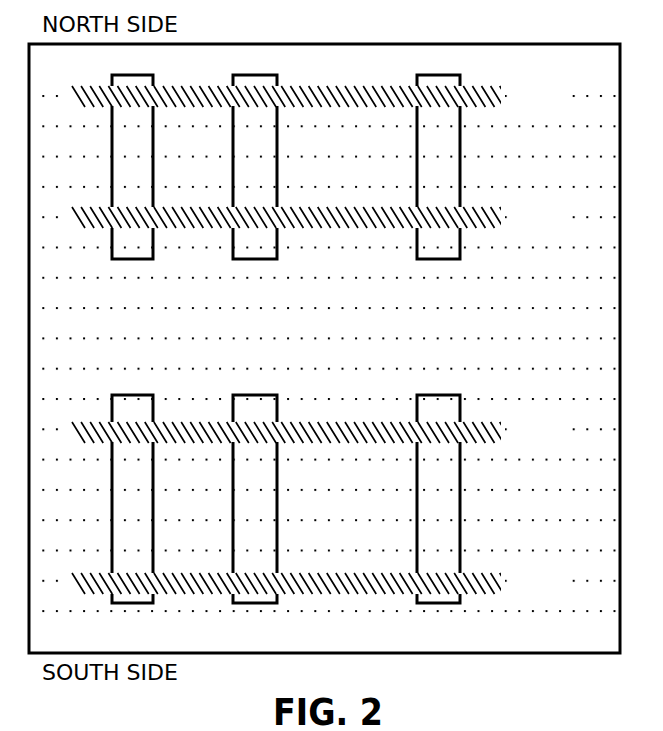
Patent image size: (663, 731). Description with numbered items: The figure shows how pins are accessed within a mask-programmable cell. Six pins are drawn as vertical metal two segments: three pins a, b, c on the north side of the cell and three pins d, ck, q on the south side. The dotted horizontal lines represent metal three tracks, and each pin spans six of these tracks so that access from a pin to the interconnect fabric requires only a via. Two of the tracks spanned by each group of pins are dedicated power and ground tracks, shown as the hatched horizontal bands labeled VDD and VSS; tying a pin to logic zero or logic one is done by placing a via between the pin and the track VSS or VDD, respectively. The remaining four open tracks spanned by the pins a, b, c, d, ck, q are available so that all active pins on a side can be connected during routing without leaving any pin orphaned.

The pin a is at (132, 167).
The pin b is at (255, 167).
The pin c is at (438, 167).
The pin d is at (132, 499).
The pin ck is at (255, 499).
The pin q is at (438, 499).
The ground track VSS is at (317, 264).
The power track VDD is at (318, 401).